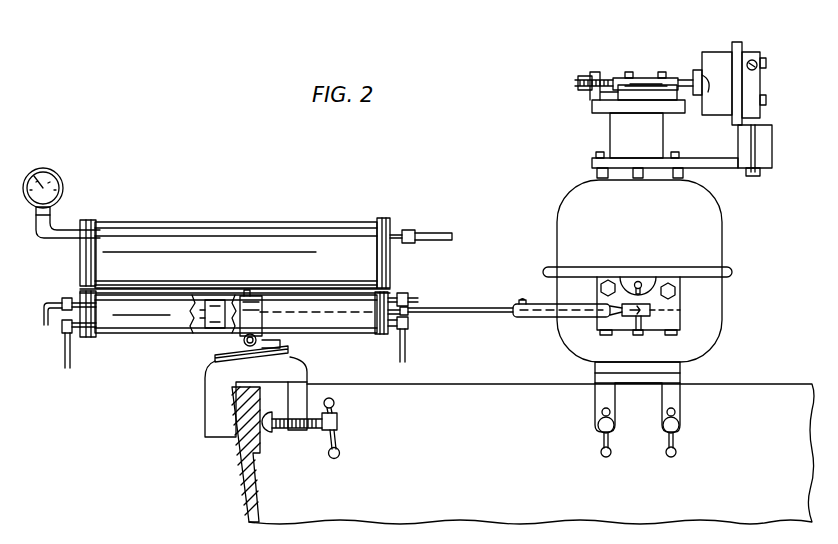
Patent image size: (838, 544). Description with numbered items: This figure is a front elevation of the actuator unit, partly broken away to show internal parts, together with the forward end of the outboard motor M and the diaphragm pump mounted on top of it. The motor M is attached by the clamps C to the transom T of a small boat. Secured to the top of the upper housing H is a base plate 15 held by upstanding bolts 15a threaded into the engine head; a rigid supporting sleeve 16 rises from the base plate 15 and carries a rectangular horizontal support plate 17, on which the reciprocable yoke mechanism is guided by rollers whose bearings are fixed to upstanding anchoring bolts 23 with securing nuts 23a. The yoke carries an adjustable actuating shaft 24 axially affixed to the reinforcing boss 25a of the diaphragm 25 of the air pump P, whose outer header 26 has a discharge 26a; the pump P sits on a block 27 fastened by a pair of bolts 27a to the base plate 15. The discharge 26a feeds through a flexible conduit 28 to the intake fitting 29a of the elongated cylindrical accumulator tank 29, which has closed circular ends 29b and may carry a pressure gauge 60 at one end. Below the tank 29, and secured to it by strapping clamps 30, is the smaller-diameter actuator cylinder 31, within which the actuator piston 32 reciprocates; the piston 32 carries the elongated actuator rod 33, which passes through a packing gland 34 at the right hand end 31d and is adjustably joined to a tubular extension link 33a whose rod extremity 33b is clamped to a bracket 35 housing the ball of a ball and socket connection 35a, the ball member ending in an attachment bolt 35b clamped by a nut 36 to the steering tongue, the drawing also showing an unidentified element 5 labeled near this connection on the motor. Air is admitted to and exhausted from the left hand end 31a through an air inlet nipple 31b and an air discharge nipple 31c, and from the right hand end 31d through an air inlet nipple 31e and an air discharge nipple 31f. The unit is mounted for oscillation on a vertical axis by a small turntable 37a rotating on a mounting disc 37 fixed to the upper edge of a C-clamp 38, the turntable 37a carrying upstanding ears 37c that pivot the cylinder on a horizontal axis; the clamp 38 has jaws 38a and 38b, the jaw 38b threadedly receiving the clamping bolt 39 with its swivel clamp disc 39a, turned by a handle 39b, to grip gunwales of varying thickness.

The pressure gauge 60 is at (65, 186).
The accumulator tank 29 is at (233, 233).
The intake fitting 29a is at (410, 229).
The closed circular ends 29b is at (80, 254).
The flexible conduit 28 is at (432, 232).
The strapping clamps 30 is at (88, 258).
The actuator cylinder 31 is at (150, 320).
The left hand end of actuator cylinder 31a is at (80, 337).
The air inlet nipple 31b is at (64, 297).
The air discharge nipple 31c is at (62, 328).
The right hand end of actuator cylinder 31d is at (382, 334).
The air inlet nipple 31e is at (403, 293).
The air discharge nipple 31f is at (408, 327).
The actuator piston 32 is at (220, 318).
The actuator rod 33 is at (470, 294).
The extension link 33a is at (540, 318).
The rod extremity 33b is at (618, 307).
The packing gland 34 is at (408, 313).
The bracket 35 is at (655, 315).
The ball and socket connection 35a is at (660, 310).
The attachment bolt 35b is at (640, 318).
The nut 36 is at (634, 332).
The mounting disc 37 is at (251, 363).
The turntable 37a is at (285, 345).
The upstanding ears 37c is at (240, 340).
The C-clamp 38 is at (212, 385).
The clamping jaw 38a is at (228, 428).
The clamping jaw 38b is at (300, 400).
The clamping bolt 39 is at (296, 425).
The swivel clamp disc 39a is at (265, 428).
The handle 39b is at (340, 437).
The bracket 5 is at (612, 323).
The base plate 15 is at (592, 162).
The upstanding bolts 15a is at (600, 152).
The supporting sleeve 16 is at (651, 139).
The support plate 17 is at (592, 105).
The anchoring bolts 23 is at (634, 69).
The securing nuts 23a is at (662, 72).
The actuating shaft 24 is at (697, 62).
The diaphragm 25 is at (715, 52).
The reinforcing boss 25a is at (723, 91).
The outer header 26 is at (752, 87).
The discharge 26a is at (756, 62).
The block 27 is at (772, 141).
The bolts 27a is at (760, 175).
The upper housing H is at (736, 221).
The outboard motor M is at (741, 286).
The air pump P is at (740, 37).
The transom T is at (498, 462).
The clamps C is at (666, 400).